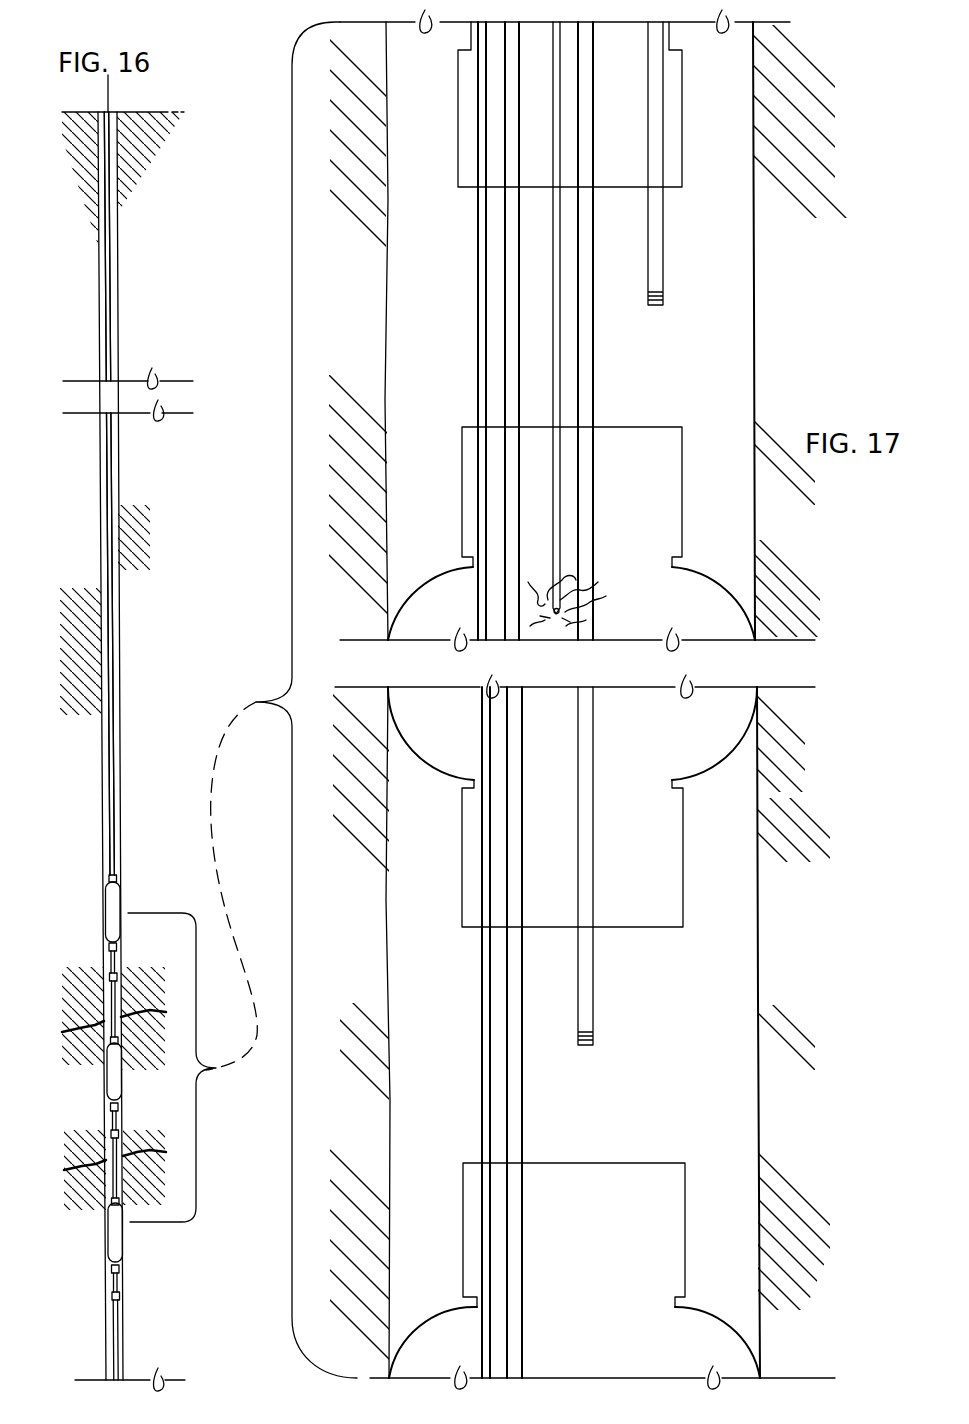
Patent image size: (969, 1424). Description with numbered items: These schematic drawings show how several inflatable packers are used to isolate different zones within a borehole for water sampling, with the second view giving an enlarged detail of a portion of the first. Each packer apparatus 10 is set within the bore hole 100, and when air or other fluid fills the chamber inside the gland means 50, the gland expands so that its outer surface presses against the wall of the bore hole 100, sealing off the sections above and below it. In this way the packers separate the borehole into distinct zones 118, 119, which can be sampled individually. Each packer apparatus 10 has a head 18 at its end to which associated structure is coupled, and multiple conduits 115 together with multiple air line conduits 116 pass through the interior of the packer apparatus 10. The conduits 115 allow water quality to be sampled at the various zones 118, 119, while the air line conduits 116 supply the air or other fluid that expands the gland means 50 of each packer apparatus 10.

In FIG. 16, the packer apparatus 10 is at (118, 897).
In FIG. 17, the first head means 18 is at (683, 102).
In FIG. 17, the gland means 50 is at (755, 545).
In FIG. 16, the bore hole 100 is at (113, 637).
In FIG. 17, the bore hole 100 is at (737, 318).
In FIG. 16, the conduit 115 is at (113, 472).
In FIG. 17, the conduit 115 is at (655, 245).
In FIG. 16, the air line conduit 116 is at (109, 493).
In FIG. 17, the air line conduit 116 is at (477, 330).
In FIG. 16, the zone 118 is at (108, 958).
In FIG. 17, the zone 118 is at (737, 272).
In FIG. 16, the zone 119 is at (108, 1152).
In FIG. 17, the zone 119 is at (736, 1033).